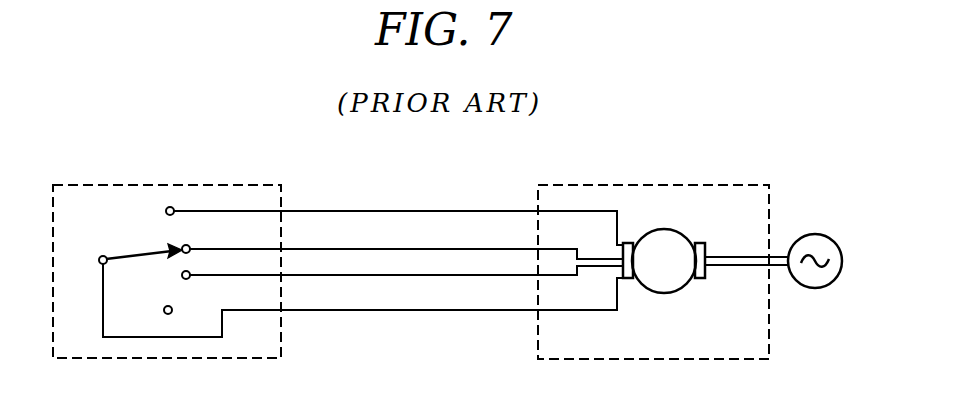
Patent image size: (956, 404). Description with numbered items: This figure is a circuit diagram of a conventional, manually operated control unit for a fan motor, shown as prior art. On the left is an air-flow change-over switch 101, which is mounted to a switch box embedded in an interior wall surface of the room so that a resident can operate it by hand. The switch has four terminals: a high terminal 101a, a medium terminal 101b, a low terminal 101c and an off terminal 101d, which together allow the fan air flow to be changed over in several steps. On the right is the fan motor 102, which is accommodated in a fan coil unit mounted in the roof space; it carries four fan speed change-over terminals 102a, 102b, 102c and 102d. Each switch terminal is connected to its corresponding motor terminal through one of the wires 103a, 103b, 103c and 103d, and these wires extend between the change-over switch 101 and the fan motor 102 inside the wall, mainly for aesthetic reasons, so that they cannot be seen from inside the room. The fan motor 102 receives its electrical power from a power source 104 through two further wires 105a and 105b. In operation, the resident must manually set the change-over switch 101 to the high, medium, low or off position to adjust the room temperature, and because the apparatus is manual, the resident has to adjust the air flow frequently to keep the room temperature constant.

The air-flow change-over switch 101 is at (176, 184).
The high terminal 101a is at (166, 212).
The medium terminal 101b is at (182, 249).
The low terminal 101c is at (183, 278).
The off terminal 101d is at (102, 266).
The fan motor 102 is at (663, 228).
The fan speed change-over terminal 102a is at (620, 243).
The fan speed change-over terminal 102b is at (608, 238).
The fan speed change-over terminal 102c is at (607, 272).
The fan speed change-over terminal 102d is at (618, 279).
The wire 103a is at (377, 189).
The wire 103b is at (473, 197).
The wire 103c is at (362, 275).
The wire 103d is at (405, 312).
The power source 104 is at (810, 233).
The wire 105a is at (752, 223).
The wire 105b is at (760, 268).